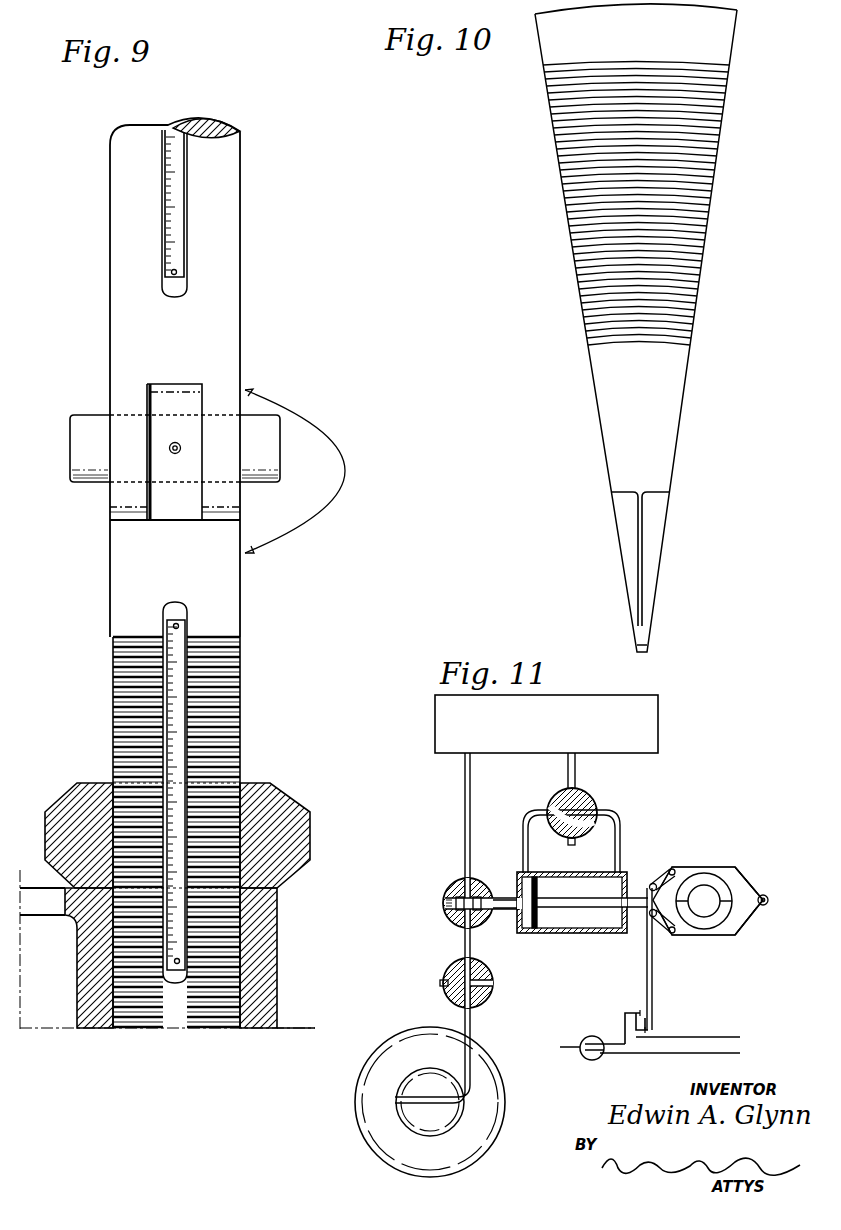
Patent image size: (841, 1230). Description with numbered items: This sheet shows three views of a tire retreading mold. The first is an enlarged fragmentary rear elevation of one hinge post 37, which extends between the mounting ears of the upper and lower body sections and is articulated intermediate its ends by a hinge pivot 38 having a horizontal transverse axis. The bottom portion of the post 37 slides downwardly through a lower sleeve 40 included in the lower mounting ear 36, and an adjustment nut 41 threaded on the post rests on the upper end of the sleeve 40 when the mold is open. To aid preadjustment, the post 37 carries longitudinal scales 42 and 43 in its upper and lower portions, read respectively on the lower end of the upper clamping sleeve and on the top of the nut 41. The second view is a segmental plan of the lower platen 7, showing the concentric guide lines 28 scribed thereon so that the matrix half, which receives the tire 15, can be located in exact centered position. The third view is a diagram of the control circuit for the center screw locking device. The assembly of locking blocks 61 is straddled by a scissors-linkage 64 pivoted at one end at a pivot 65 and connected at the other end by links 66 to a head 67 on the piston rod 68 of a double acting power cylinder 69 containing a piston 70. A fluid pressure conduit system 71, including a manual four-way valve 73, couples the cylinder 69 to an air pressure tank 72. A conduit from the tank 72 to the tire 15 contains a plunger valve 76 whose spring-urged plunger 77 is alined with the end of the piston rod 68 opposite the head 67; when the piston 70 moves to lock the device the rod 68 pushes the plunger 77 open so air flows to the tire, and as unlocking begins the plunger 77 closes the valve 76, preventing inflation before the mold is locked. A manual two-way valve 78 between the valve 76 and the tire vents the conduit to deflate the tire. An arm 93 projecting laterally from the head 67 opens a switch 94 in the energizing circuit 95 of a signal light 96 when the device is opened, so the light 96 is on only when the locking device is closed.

In FIG. 10, the lower platen 7 is at (668, 420).
In FIG. 10, the concentric guide lines 28 is at (660, 272).
In FIG. 9, the lower mounting ear 36 is at (47, 905).
In FIG. 9, the hinge post 37 is at (335, 472).
In FIG. 9, the hinge pivot 38 is at (85, 450).
In FIG. 9, the lower sleeve 40 is at (265, 957).
In FIG. 9, the adjustment nut 41 is at (285, 832).
In FIG. 9, the longitudinal scale 42 is at (178, 224).
In FIG. 9, the longitudinal scale 43 is at (180, 688).
In FIG. 11, the tire 15 is at (355, 1118).
In FIG. 11, the locking blocks 61 is at (697, 918).
In FIG. 11, the scissors-linkage 64 is at (738, 872).
In FIG. 11, the pivot 65 is at (770, 899).
In FIG. 11, the links 66 is at (658, 922).
In FIG. 11, the head 67 is at (680, 863).
In FIG. 11, the piston rod 68 is at (612, 872).
In FIG. 11, the power cylinder 69 is at (553, 866).
In FIG. 11, the piston 70 is at (540, 918).
In FIG. 11, the fluid pressure conduit system 71 is at (650, 817).
In FIG. 11, the air pressure tank 72 is at (655, 722).
In FIG. 11, the four-way valve 73 is at (590, 794).
In FIG. 11, the plunger valve 76 is at (453, 884).
In FIG. 11, the plunger 77 is at (448, 908).
In FIG. 11, the two-way valve 78 is at (445, 974).
In FIG. 11, the arm 93 is at (646, 970).
In FIG. 11, the switch 94 is at (641, 1012).
In FIG. 11, the energizing circuit 95 is at (678, 1052).
In FIG. 11, the signal light 96 is at (580, 1048).